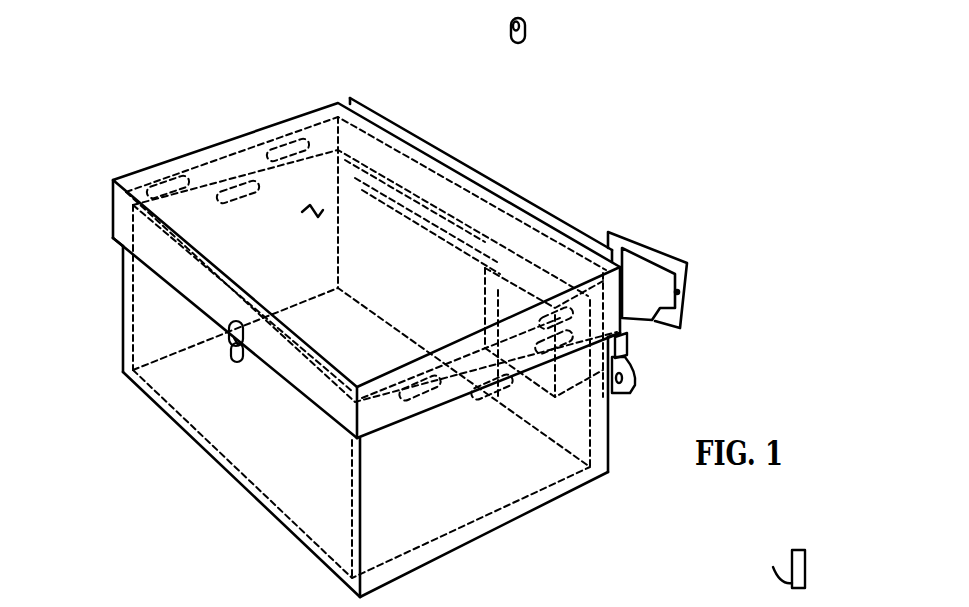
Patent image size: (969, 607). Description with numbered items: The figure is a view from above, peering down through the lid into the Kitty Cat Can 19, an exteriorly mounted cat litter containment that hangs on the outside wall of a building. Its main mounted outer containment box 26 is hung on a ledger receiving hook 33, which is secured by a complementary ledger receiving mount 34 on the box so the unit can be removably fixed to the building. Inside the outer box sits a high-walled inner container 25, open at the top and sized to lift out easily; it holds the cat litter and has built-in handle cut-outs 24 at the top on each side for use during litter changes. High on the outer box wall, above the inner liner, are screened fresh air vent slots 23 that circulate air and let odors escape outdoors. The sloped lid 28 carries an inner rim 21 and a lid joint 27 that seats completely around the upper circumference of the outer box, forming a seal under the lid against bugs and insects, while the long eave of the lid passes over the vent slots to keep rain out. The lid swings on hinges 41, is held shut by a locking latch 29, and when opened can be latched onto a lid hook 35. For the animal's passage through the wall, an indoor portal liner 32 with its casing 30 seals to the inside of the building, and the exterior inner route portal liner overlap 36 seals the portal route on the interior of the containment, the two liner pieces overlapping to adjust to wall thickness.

The Kitty Cat Can 19 is at (186, 485).
The inner rim 21 is at (152, 174).
The screened fresh air vent slots 23 is at (274, 148).
The handle cut-outs 24 is at (228, 190).
The high-walled inner container 25 is at (320, 208).
The main mounted outer containment box 26 is at (317, 134).
The lid joint 27 is at (134, 187).
The sloped lid 28 is at (293, 117).
The locking latch 29 is at (231, 352).
The casing 30 is at (645, 239).
The indoor portal liner 32 is at (652, 309).
The ledger receiving hook 33 is at (636, 389).
The ledger receiving mount 34 is at (627, 347).
The lid hook 35 is at (525, 33).
The exterior inner route portal liner overlap 36 is at (558, 265).
The hinges 41 is at (758, 606).